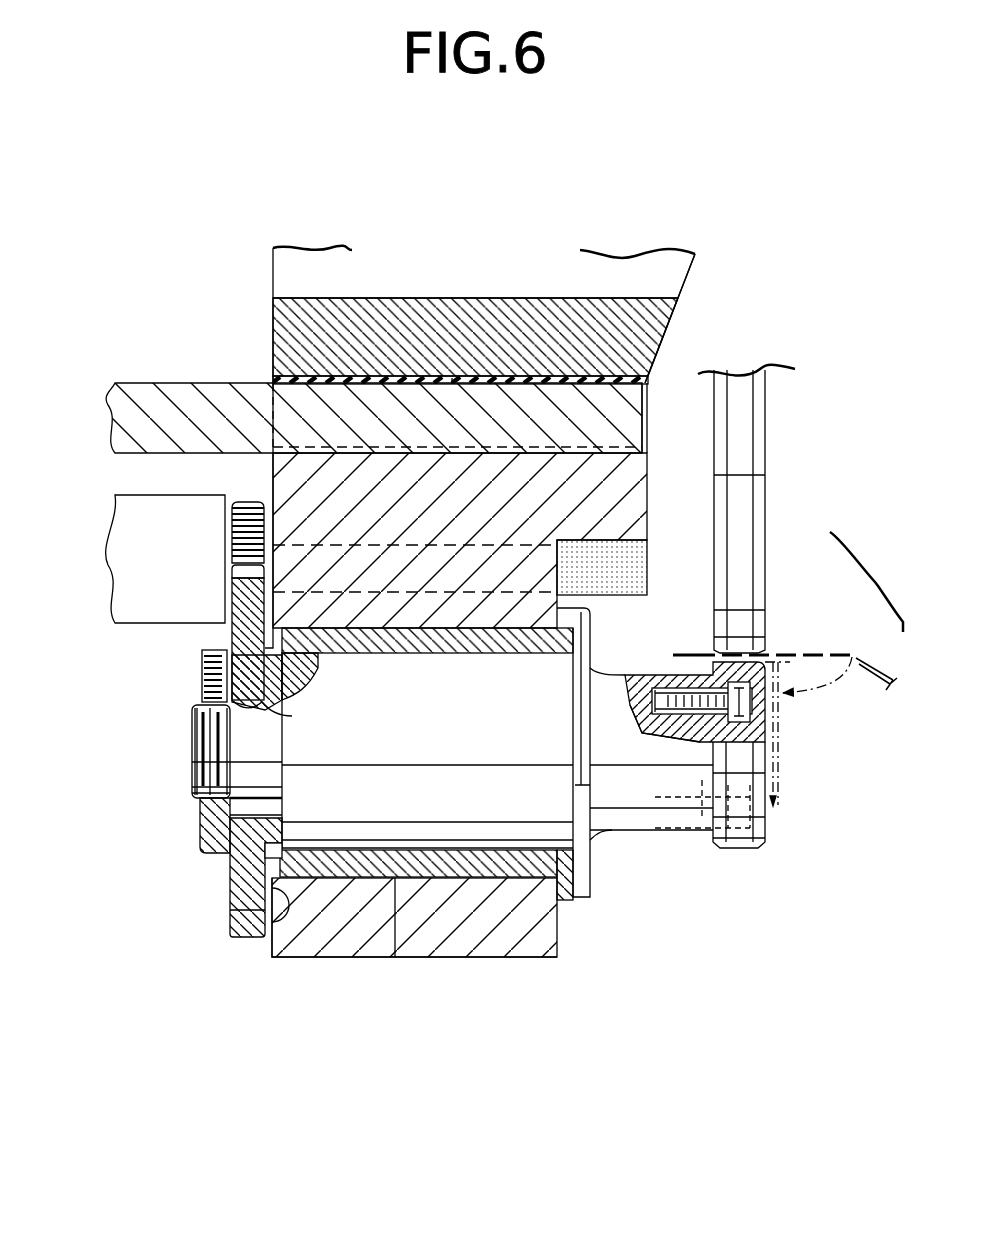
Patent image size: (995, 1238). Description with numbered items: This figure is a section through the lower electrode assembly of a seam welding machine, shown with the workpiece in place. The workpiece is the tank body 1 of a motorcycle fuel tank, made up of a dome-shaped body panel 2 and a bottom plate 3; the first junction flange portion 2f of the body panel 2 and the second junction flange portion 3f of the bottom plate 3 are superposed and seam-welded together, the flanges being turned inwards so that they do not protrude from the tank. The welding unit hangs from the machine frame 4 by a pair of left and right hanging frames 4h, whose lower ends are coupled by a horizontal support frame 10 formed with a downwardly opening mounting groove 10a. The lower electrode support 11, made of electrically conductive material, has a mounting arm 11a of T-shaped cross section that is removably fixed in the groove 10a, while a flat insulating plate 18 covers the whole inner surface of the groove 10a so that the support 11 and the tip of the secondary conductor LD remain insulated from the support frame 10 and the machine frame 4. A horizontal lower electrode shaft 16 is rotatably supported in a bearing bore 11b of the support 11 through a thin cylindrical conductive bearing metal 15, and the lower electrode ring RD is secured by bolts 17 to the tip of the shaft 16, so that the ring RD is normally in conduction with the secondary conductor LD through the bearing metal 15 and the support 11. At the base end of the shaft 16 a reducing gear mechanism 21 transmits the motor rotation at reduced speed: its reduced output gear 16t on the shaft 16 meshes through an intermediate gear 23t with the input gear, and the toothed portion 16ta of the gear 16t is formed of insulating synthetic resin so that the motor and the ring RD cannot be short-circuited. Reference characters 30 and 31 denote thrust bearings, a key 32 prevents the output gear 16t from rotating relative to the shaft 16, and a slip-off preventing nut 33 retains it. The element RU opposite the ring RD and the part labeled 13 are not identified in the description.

The tank body 1 is at (868, 582).
The body panel 2 is at (811, 654).
The first junction flange portion 2f is at (694, 655).
The bottom plate 3 is at (852, 656).
The second junction flange portion 3f is at (648, 728).
The machine frame 4 is at (272, 264).
The hanging frames 4h is at (667, 280).
The support frame 10 is at (272, 334).
The mounting groove 10a is at (352, 385).
The lower electrode support 11 is at (330, 962).
The mounting arm 11a is at (605, 497).
The bearing bore 11b is at (390, 878).
The drum gear 13 is at (236, 390).
The bearing metal 15 is at (487, 878).
The lower electrode shaft 16 is at (470, 758).
The reduced output gear 16t is at (223, 638).
The toothed portion 16ta is at (244, 573).
The bolts 17 is at (765, 695).
The insulating plate 18 is at (452, 378).
The reducing gear mechanism 21 is at (224, 529).
The intermediate gear 23t is at (246, 504).
The thrust bearing 30 is at (563, 890).
The thrust bearing 31 is at (272, 880).
The key 32 is at (292, 716).
The slip-off preventing nut 33 is at (207, 838).
The secondary conductor LD is at (525, 396).
The upper positioning rod RU is at (752, 443).
The lower electrode ring RD is at (735, 848).